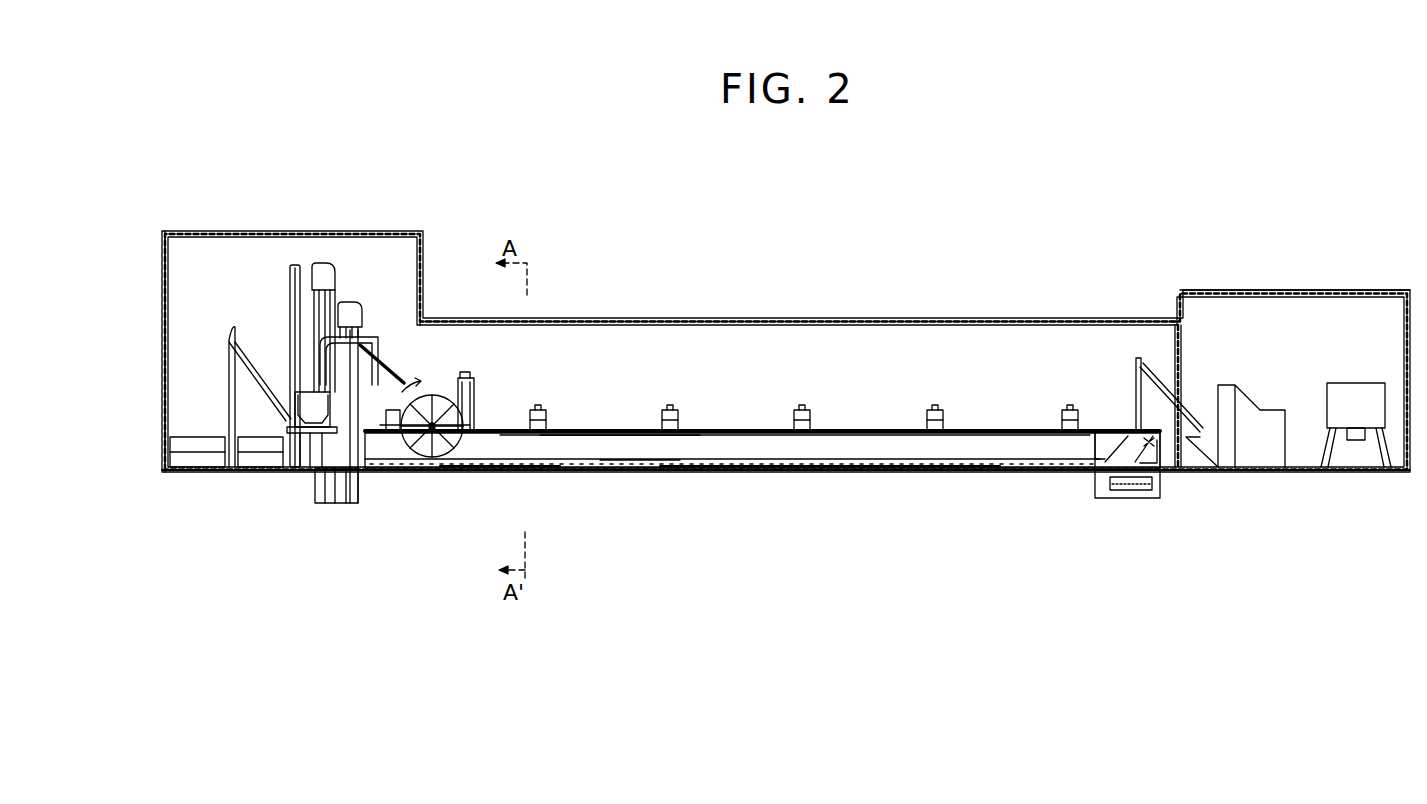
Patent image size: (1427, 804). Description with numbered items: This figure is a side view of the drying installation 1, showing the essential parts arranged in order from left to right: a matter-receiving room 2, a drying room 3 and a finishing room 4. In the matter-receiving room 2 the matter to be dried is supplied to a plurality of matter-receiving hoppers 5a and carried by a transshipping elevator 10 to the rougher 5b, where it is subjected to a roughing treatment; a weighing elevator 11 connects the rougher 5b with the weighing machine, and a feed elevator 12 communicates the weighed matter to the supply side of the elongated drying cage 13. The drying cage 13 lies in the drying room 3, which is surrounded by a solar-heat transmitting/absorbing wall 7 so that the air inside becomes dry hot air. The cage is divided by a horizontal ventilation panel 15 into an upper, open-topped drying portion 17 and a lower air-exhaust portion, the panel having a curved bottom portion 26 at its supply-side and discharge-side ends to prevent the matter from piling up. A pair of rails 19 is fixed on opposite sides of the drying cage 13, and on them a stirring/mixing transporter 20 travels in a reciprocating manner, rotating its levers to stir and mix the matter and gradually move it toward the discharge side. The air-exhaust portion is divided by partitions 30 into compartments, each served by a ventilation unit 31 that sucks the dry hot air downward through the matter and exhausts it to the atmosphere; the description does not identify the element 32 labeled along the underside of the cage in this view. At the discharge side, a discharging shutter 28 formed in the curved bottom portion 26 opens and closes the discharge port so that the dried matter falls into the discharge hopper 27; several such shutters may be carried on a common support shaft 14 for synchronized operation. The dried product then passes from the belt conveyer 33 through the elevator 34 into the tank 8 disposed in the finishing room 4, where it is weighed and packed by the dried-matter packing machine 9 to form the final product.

The drying installation 1 is at (862, 316).
The matter-receiving room 2 is at (198, 289).
The drying room 3 is at (640, 355).
The finishing room 4 is at (1302, 312).
The matter-receiving hoppers 5a is at (198, 440).
The rougher 5b is at (310, 412).
The solar-heat transmitting/absorbing wall 7 is at (765, 320).
The tank 8 is at (1258, 410).
The dried-matter packing machine 9 is at (1353, 393).
The transshipping elevator 10 is at (290, 312).
The weighing elevator 11 is at (325, 268).
The feed elevator 12 is at (352, 305).
The elongated drying cage 13 is at (998, 425).
The common support shaft 14 is at (395, 472).
The horizontal ventilation panel 15 is at (646, 462).
The drying portion 17 is at (736, 428).
The rails 19 is at (597, 430).
The stirring/mixing transporter 20 is at (428, 370).
The curved bottom portion 26 is at (1110, 432).
The discharge hopper 27 is at (1160, 448).
The discharging shutter 28 is at (1119, 432).
The partitions 30 is at (796, 470).
The ventilation unit 31 is at (539, 405).
The heating element 32 is at (508, 470).
The belt conveyer 33 is at (1130, 492).
The elevator 34 is at (1145, 395).